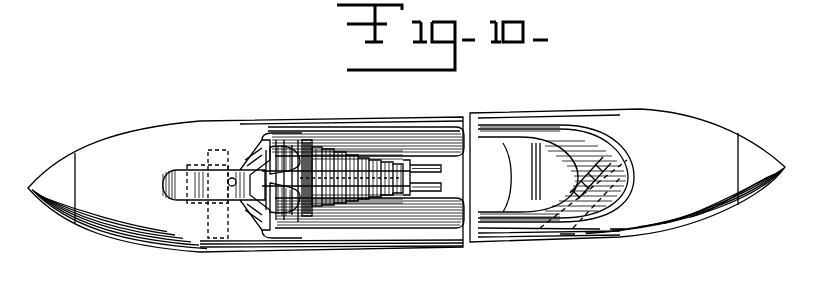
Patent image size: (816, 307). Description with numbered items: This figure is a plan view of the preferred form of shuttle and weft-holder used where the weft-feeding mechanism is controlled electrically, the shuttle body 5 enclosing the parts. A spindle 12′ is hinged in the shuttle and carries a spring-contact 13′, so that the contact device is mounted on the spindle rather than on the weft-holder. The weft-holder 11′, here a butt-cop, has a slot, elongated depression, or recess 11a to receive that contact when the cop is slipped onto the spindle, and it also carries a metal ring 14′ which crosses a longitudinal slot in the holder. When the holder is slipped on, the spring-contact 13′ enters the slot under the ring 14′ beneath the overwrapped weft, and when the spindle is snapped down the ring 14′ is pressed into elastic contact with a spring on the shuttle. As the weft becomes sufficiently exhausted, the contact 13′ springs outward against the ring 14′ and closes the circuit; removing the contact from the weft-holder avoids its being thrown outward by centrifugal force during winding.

The torpedo hull 5 is at (601, 112).
The weft-holder 11′ is at (330, 142).
The recess 11a is at (392, 182).
The spindle 12′ is at (440, 172).
The spring-contact 13′ is at (353, 212).
The metal ring 14′ is at (306, 212).